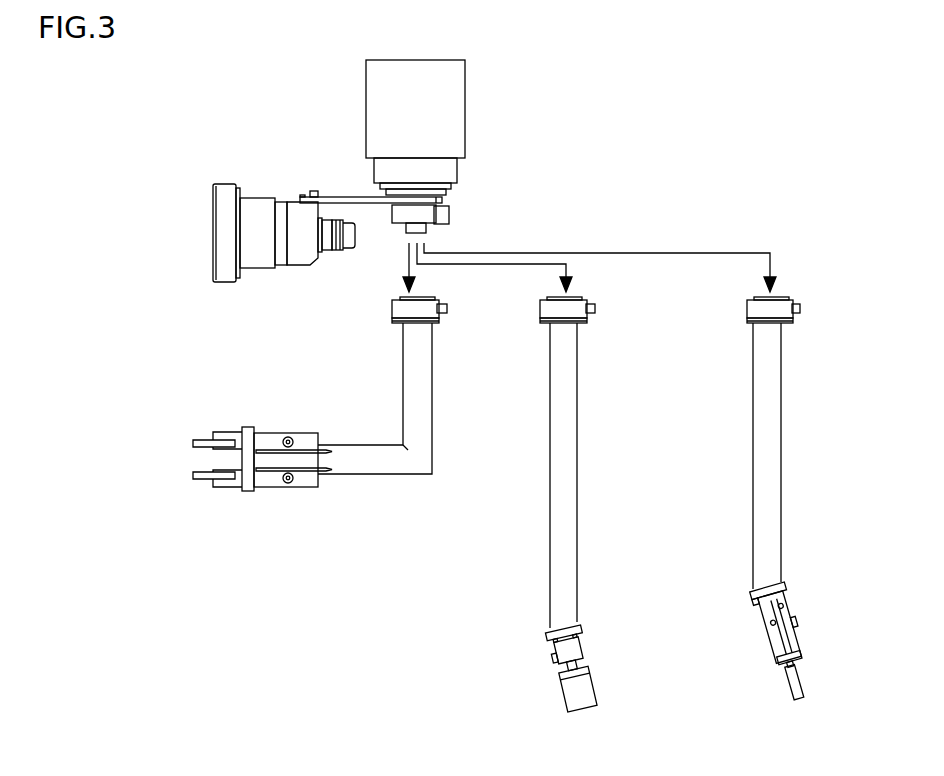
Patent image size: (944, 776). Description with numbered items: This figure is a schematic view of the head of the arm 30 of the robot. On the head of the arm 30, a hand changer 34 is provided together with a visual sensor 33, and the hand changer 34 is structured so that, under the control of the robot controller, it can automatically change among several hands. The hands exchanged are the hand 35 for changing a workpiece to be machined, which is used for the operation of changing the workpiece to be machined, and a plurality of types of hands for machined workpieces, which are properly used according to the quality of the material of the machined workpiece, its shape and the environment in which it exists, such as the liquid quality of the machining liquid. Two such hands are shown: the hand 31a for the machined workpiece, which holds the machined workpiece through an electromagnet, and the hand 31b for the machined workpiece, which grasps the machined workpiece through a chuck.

The arm 30 is at (373, 105).
The visual sensor 33 is at (212, 240).
The hand changer 34 is at (449, 215).
The hand for changing a workpiece to be machined 35 is at (394, 475).
The hand for the machined workpiece 31a is at (552, 525).
The hand for the machined workpiece 31b is at (755, 517).